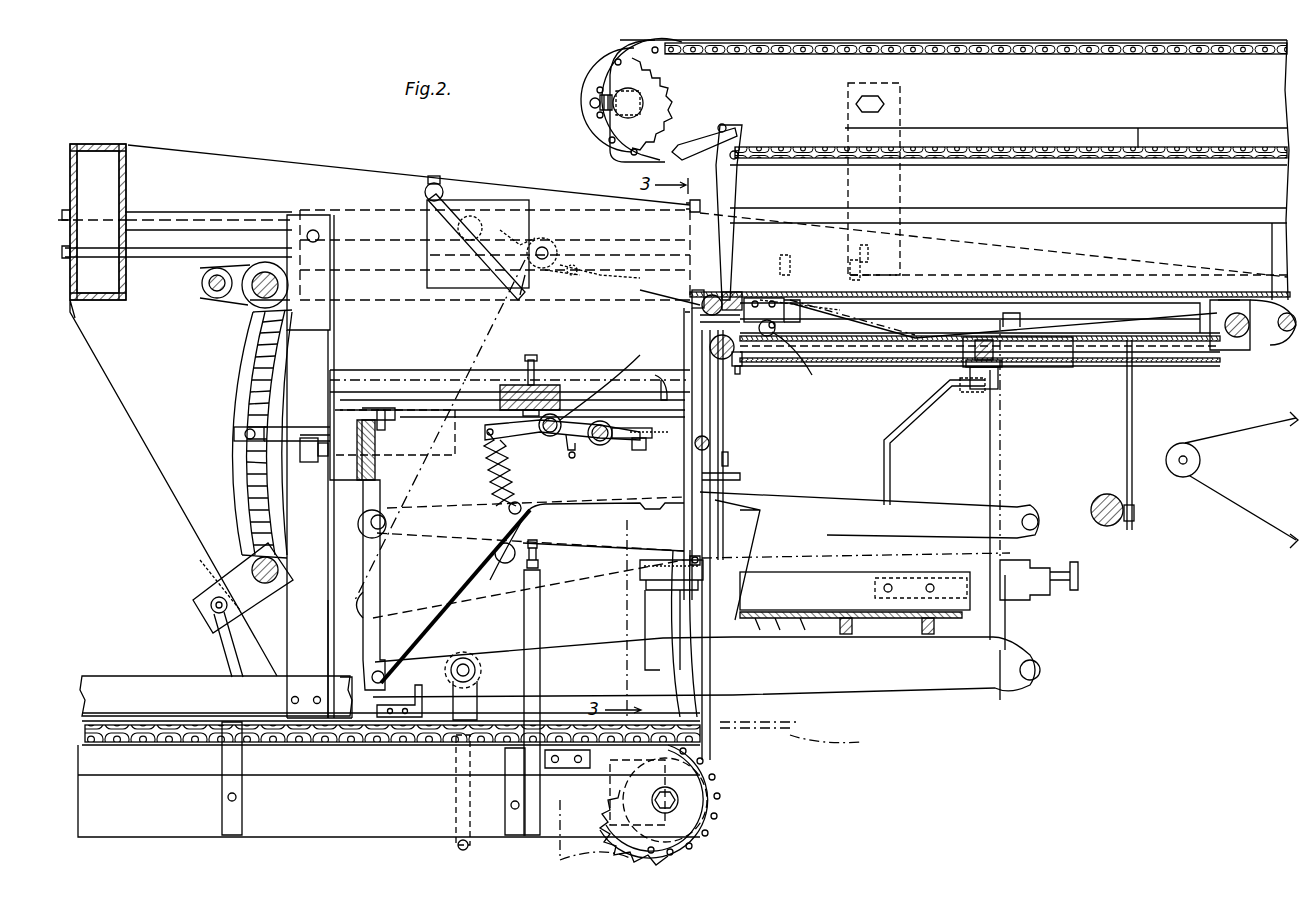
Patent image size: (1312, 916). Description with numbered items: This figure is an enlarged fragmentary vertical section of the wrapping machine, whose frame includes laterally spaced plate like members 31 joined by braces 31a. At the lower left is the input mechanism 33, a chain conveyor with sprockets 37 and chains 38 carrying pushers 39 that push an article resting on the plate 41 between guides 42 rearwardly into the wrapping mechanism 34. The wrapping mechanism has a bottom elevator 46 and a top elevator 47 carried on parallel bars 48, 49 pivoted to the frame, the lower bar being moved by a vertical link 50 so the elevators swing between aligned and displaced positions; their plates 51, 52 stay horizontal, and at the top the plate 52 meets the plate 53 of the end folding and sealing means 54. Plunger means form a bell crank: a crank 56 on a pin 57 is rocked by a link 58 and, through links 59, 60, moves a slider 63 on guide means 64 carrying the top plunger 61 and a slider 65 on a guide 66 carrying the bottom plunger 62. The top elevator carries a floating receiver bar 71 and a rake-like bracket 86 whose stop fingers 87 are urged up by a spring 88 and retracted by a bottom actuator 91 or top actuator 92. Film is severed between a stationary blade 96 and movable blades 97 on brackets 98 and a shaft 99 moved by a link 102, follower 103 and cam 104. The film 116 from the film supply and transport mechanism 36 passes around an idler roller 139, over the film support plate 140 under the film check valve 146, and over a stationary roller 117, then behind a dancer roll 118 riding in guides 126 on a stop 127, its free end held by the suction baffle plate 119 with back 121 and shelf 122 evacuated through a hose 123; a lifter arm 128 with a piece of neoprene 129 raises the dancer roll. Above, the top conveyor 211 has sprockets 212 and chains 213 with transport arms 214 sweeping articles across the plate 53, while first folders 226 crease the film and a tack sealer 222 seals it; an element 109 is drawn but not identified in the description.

The plate like members 31 is at (232, 175).
The braces 31a is at (126, 155).
The input mechanism 33 is at (758, 781).
The wrapping mechanism 34 is at (1098, 604).
The film supply and transport mechanism 36 is at (1238, 522).
The sprockets 37 is at (710, 820).
The chains 38 is at (138, 742).
The pushers 39 is at (402, 715).
The plate 41 is at (200, 722).
The guides 42 is at (115, 680).
The bottom elevator 46 is at (1020, 640).
The top elevator 47 is at (612, 505).
The bars 48 is at (905, 690).
The bars 49 is at (818, 495).
The link 50 is at (456, 850).
The plate 51 is at (820, 615).
The plate 52 is at (573, 384).
The plate 53 is at (955, 292).
The end folding and sealing means 54 is at (597, 172).
The crank 56 is at (545, 400).
The pin 57 is at (503, 565).
The link 58 is at (360, 688).
The link 59 is at (518, 235).
The link 60 is at (600, 275).
The top plunger 61 is at (492, 270).
The bottom plunger 62 is at (902, 430).
The slider 63 is at (470, 210).
The guide means 64 is at (388, 240).
The slider 65 is at (1055, 370).
The guide 66 is at (832, 368).
The floating receiver bar 71 is at (540, 385).
The rake-like bracket 86 is at (572, 448).
The stop fingers 87 is at (666, 376).
The spring 88 is at (488, 468).
The bottom actuator 91 is at (540, 622).
The top actuator 92 is at (692, 305).
The stationary blade 96 is at (760, 345).
The movable blades 97 is at (636, 445).
The brackets 98 is at (608, 445).
The shaft 99 is at (556, 437).
The link 102 is at (300, 427).
The follower 103 is at (248, 425).
The cam 104 is at (240, 447).
The pivot link 109 is at (230, 645).
The film 116 is at (1262, 350).
The stationary roller 117 is at (725, 358).
The dancer roll 118 is at (710, 440).
The suction baffle plate 119 is at (630, 582).
The back 121 is at (770, 558).
The shelf 122 is at (660, 593).
The hose 123 is at (722, 718).
The guides 126 is at (702, 413).
The stop 127 is at (730, 460).
The lifter arm 128 is at (780, 530).
The piece of neoprene 129 is at (742, 476).
The idler roller 139 is at (1200, 470).
The film support plate 140 is at (912, 345).
The film check valve 146 is at (772, 305).
The top conveyor 211 is at (588, 113).
The sprockets 212 is at (701, 104).
The chains 213 is at (988, 150).
The transport arms 214 is at (728, 192).
The tack sealer 222 is at (680, 300).
The first folders 226 is at (388, 372).